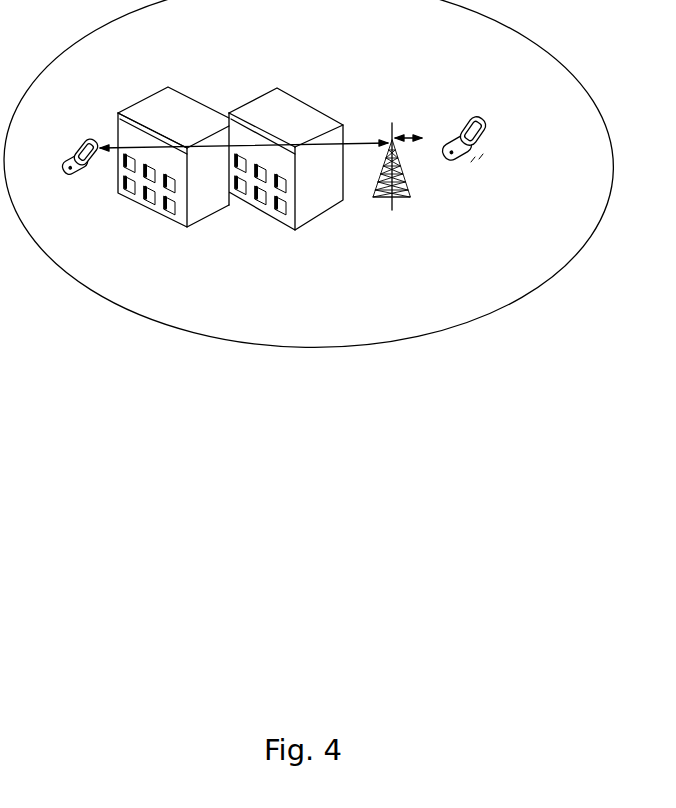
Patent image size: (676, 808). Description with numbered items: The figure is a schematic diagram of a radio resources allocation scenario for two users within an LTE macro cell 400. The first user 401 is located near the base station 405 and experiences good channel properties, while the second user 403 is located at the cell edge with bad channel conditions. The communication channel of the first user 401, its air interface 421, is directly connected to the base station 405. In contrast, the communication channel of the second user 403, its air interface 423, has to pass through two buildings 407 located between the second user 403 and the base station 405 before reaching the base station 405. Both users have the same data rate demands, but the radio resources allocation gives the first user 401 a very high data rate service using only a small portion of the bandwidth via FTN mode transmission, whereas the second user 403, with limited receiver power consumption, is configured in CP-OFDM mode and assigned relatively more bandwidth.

The macro cell 400 is at (430, 333).
The User #1 401 is at (487, 162).
The User #2 403 is at (85, 183).
The base station 405 is at (407, 205).
The buildings 407 is at (212, 232).
The air interface 421 is at (412, 128).
The air interface 423 is at (357, 135).